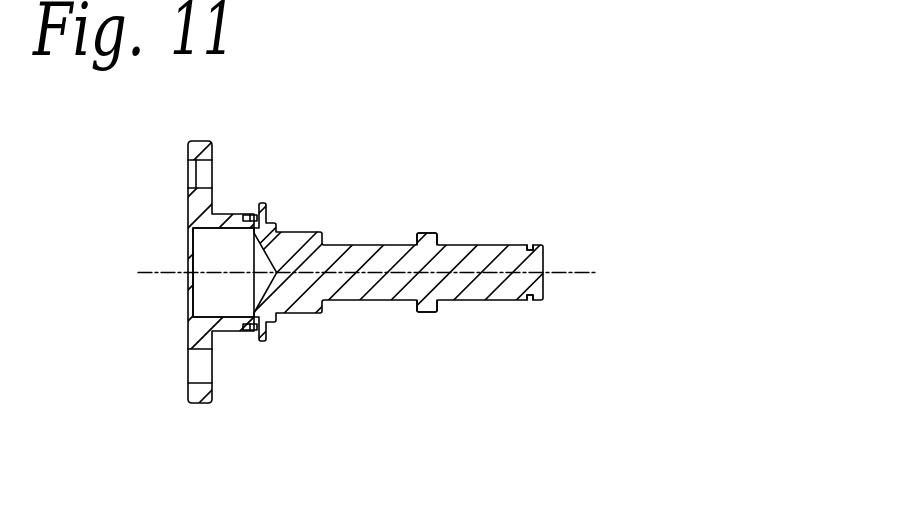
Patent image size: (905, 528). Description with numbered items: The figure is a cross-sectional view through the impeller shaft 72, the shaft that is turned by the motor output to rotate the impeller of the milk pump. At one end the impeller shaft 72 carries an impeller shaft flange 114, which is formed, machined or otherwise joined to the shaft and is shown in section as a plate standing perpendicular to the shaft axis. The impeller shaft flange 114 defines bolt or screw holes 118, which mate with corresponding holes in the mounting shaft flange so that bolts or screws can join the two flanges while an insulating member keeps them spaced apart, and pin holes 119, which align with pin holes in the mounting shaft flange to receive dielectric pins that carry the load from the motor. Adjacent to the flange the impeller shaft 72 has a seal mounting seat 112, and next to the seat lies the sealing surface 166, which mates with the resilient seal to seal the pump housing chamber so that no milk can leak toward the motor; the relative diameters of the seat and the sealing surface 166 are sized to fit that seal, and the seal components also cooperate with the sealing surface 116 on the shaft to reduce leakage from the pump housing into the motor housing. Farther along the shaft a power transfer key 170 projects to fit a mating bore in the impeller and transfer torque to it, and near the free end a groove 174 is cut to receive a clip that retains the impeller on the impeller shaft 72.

The impeller shaft 72 is at (485, 143).
The seal mounting seat 112 is at (228, 215).
The impeller shaft flange 114 is at (206, 140).
The sealing surface 116 is at (217, 302).
The bolt or screw holes 118 is at (188, 188).
The pin holes 119 is at (213, 367).
The sealing surface 166 is at (310, 314).
The power transfer key 170 is at (422, 233).
The groove 174 is at (531, 245).